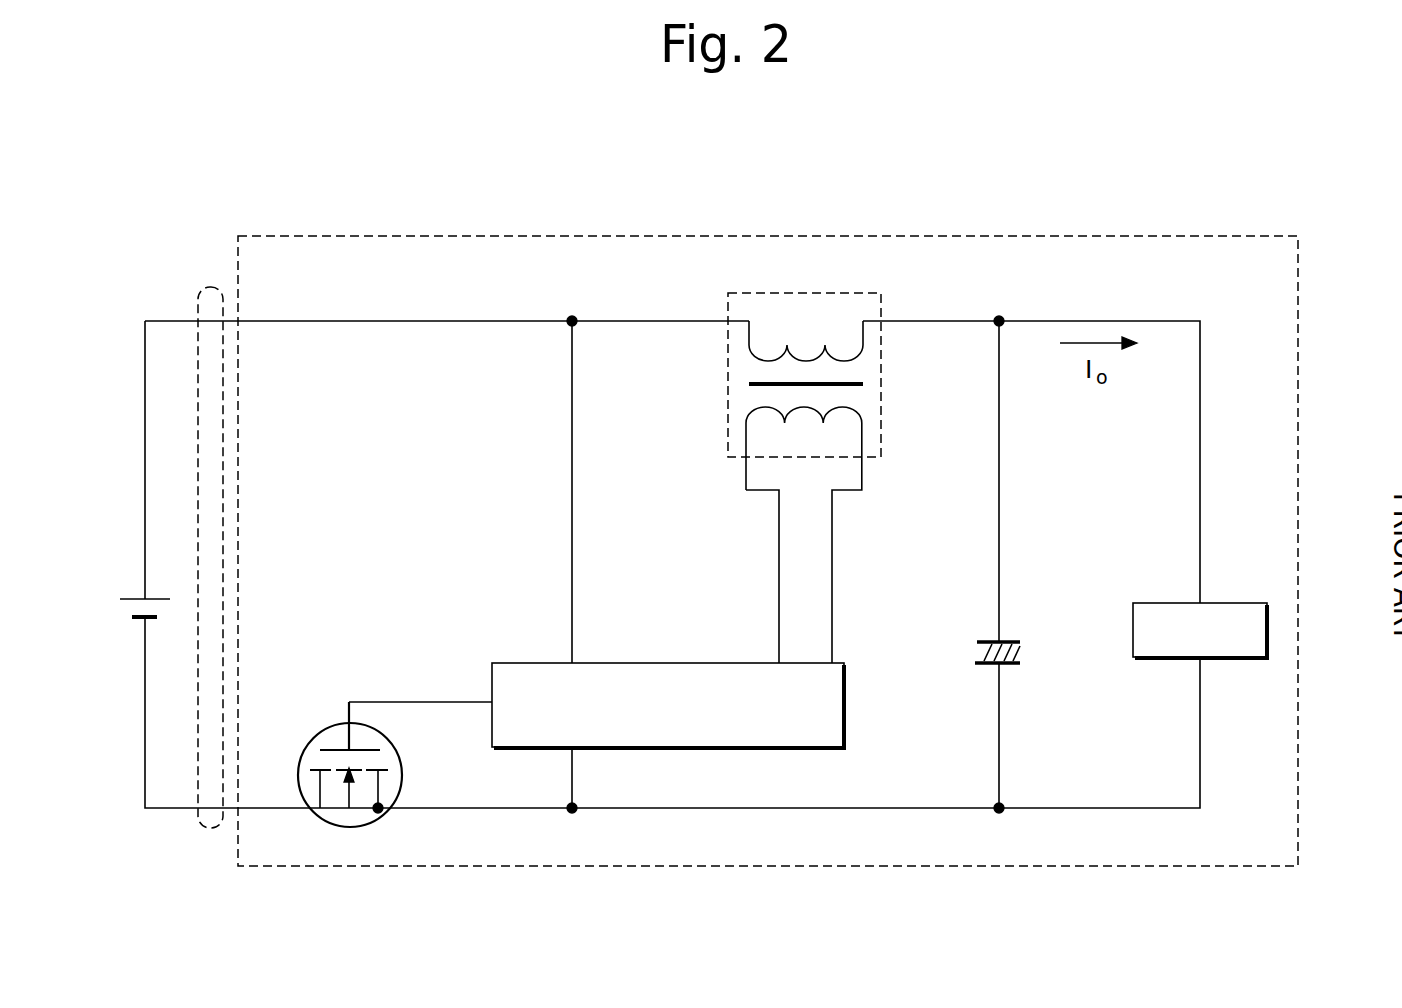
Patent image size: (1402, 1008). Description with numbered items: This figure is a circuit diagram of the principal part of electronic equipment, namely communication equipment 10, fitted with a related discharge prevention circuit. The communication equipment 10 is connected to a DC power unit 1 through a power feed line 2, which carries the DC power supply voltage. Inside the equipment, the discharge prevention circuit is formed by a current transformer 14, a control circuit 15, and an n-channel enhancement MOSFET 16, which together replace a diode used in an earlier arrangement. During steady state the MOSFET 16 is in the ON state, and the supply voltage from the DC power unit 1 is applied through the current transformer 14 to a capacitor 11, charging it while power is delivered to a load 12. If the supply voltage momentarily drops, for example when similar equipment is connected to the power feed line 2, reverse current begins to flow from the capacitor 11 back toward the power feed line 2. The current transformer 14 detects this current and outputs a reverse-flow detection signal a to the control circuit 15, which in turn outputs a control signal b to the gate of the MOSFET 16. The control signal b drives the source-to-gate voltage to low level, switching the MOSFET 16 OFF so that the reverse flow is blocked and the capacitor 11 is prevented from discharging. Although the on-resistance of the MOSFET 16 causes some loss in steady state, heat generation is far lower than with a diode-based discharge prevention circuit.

The DC power unit 1 is at (133, 597).
The power feed line 2 is at (214, 283).
The communication equipment 10 is at (752, 235).
The capacitor 11 is at (1020, 648).
The load 12 is at (1243, 601).
The current transformer 14 is at (881, 400).
The control circuit 15 is at (663, 660).
The n-channel enhancement MOSFET 16 is at (402, 768).
The reverse-flow detection signal a is at (832, 570).
The control signal b is at (432, 700).